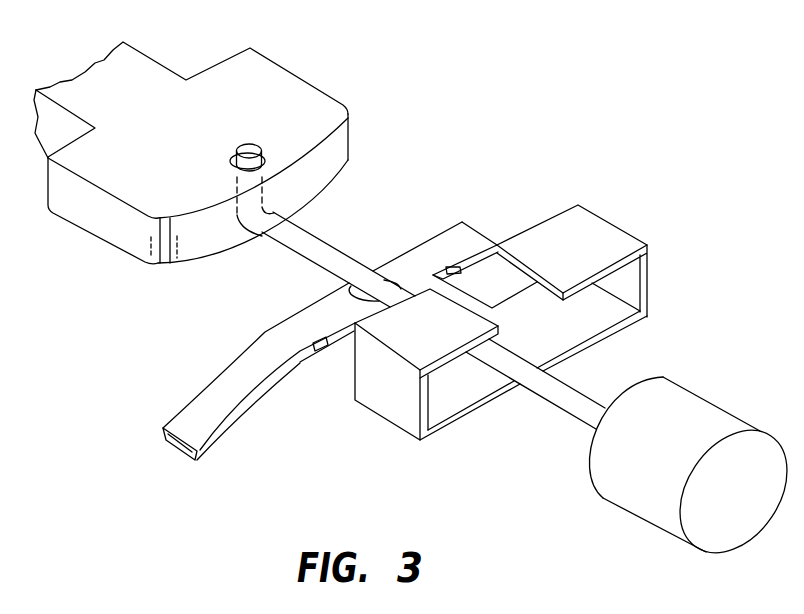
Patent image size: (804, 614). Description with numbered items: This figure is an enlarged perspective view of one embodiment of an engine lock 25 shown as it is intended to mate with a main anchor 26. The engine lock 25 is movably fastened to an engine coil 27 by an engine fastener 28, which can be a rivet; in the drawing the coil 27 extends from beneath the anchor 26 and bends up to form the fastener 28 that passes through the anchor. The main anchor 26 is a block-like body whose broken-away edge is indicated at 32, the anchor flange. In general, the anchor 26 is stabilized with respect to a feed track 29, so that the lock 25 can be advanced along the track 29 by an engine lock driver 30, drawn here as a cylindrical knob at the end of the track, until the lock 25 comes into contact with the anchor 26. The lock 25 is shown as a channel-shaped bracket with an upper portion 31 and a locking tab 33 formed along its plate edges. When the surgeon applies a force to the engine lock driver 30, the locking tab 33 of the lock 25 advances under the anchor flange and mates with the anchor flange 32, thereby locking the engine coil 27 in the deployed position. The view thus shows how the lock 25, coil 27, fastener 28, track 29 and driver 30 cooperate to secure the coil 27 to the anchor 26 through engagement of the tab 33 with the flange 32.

The engine lock 25 is at (498, 283).
The main anchor 26 is at (200, 134).
The engine coil 27 is at (193, 403).
The engine fastener 28 is at (345, 293).
The feed track 29 is at (550, 407).
The engine lock driver 30 is at (709, 399).
The channel member 31 is at (546, 232).
The anchor flange 32 is at (213, 62).
The locking tab 33 is at (457, 275).